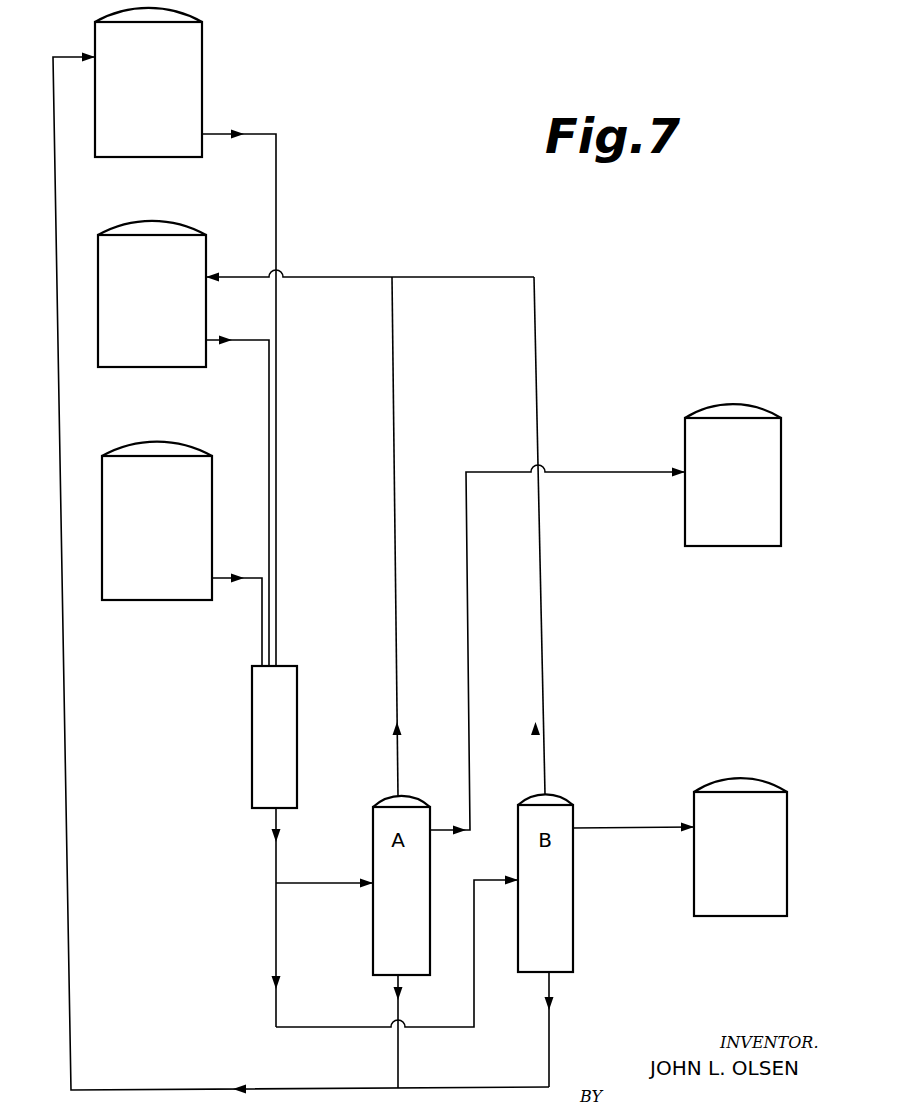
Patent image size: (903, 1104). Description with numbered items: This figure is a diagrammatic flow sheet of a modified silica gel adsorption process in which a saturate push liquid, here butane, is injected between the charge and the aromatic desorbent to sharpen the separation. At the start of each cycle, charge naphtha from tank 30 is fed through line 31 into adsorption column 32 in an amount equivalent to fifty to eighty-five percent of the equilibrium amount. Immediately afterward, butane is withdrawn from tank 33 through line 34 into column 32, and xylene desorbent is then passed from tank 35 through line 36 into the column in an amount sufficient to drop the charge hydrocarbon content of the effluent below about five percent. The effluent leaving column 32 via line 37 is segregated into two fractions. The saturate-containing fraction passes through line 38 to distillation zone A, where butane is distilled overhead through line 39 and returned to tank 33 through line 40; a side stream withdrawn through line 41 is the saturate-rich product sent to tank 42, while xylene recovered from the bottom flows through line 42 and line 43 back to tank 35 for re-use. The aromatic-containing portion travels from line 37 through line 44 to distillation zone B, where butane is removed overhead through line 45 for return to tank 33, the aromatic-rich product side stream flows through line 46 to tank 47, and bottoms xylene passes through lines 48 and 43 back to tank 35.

The charge naphtha tank 30 is at (200, 473).
The charge line 31 is at (220, 578).
The adsorption column 32 is at (255, 680).
The butane tank 33 is at (207, 252).
The butane line 34 is at (253, 340).
The xylene desorbent tank 35 is at (198, 63).
The desorbent line 36 is at (250, 134).
The effluent line 37 is at (273, 859).
The saturate fraction line 38 is at (310, 882).
The butane overhead line 39 is at (396, 535).
The butane return line 40 is at (303, 277).
The side stream line 41 is at (468, 608).
The saturate-rich product tank 42 is at (781, 520).
The xylene return line 43 is at (72, 858).
The aromatic fraction line 44 is at (305, 1026).
The butane overhead line 45 is at (540, 410).
The aromatic side stream line 46 is at (633, 833).
The aromatic-rich product tank 47 is at (783, 861).
The zone B bottoms line 48 is at (553, 1042).